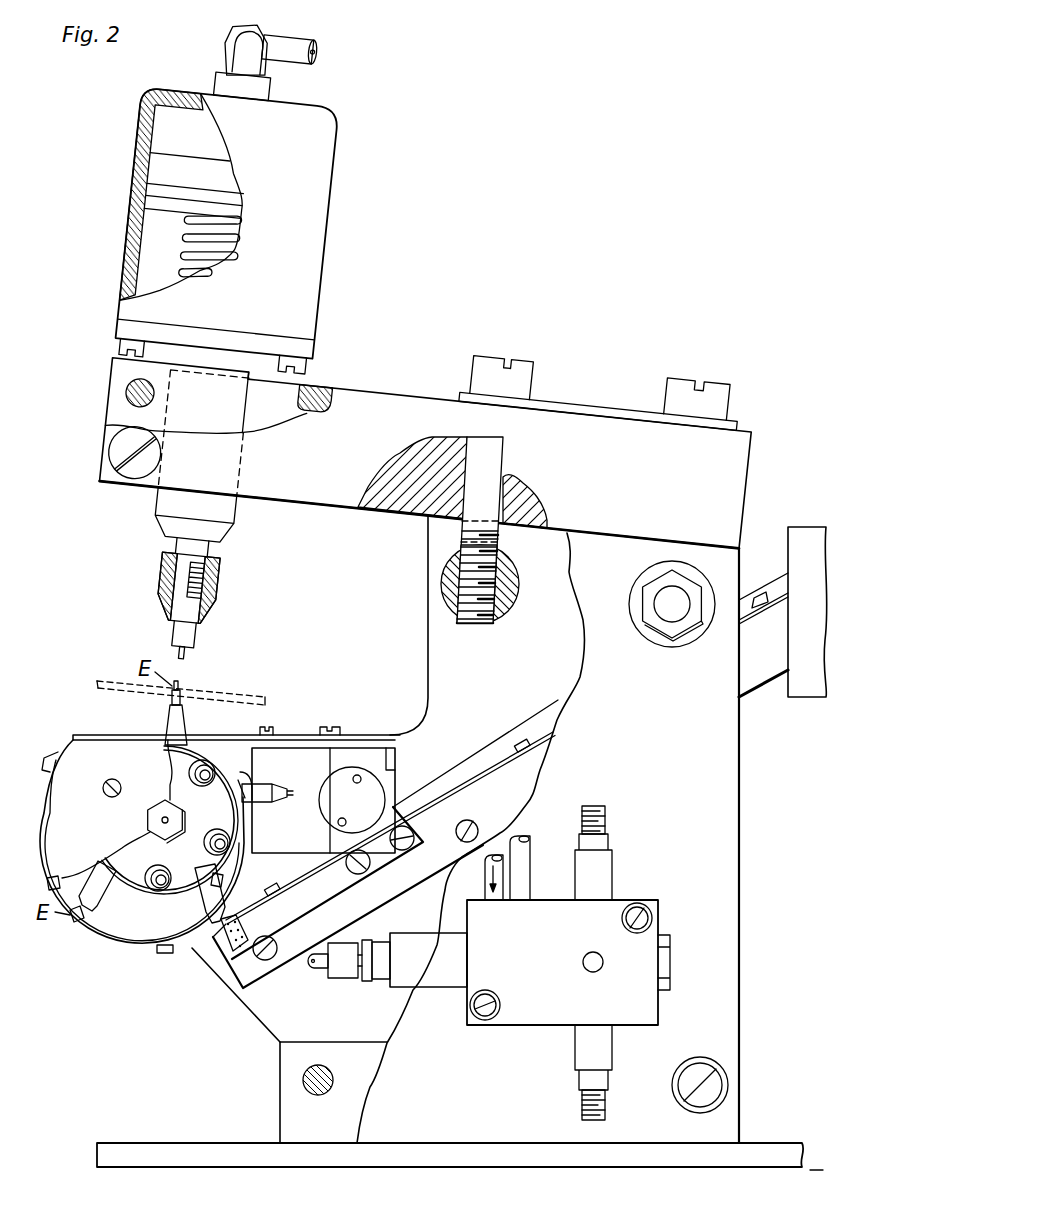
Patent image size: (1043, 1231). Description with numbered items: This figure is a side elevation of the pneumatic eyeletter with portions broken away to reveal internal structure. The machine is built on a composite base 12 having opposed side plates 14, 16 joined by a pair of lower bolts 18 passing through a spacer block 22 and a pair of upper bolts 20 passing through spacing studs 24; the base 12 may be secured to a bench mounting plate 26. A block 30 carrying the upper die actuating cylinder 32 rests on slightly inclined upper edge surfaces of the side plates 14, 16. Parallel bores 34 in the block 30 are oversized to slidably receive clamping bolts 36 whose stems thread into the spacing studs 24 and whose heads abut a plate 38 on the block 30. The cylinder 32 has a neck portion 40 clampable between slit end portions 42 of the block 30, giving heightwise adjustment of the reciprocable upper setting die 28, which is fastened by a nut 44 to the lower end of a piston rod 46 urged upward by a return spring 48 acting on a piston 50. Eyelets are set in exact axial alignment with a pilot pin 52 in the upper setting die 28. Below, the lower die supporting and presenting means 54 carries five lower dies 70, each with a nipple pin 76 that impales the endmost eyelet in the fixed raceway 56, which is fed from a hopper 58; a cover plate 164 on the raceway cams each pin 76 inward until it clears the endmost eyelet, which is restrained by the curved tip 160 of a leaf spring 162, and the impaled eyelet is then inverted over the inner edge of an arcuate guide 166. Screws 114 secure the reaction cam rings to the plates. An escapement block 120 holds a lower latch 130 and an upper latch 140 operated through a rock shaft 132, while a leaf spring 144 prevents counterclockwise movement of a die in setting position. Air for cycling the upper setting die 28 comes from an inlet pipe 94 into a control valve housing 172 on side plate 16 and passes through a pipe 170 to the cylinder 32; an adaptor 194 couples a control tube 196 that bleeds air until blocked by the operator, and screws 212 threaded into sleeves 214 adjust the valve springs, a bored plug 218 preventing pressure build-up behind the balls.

The composite base 12 is at (758, 842).
The side plate 14 is at (497, 676).
The side plate 16 is at (582, 620).
The lower bolts 18 is at (319, 1096).
The upper bolts 20 is at (676, 612).
The spacer block 22 is at (352, 1042).
The spacing studs 24 is at (508, 571).
The bench mounting plate 26 is at (150, 1143).
The upper setting die 28 is at (172, 632).
The block 30 is at (390, 396).
The upper die actuating cylinder 32 is at (321, 218).
The parallel bores 34 is at (505, 477).
The clamping bolts 36 is at (532, 368).
The plate 38 is at (610, 405).
The neck portion 40 is at (160, 505).
The slit end portions 42 is at (105, 424).
The nut 44 is at (160, 590).
The piston rod 46 is at (172, 556).
The return spring 48 is at (186, 224).
The piston 50 is at (189, 166).
The pilot pin 52 is at (186, 651).
The lower die supporting and presenting means 54 is at (88, 939).
The raceway 56 is at (500, 733).
The hopper 58 is at (807, 527).
The lower dies 70 is at (187, 716).
The nipple pin 76 is at (291, 789).
The inlet pipe 94 is at (486, 870).
The screws 114 is at (104, 790).
The block 120 is at (308, 842).
The lower latch 130 is at (258, 852).
The rock shaft 132 is at (374, 799).
The upper latch 140 is at (244, 778).
The leaf spring 144 is at (91, 735).
The curved tip 160 is at (231, 946).
The leaf spring 162 is at (343, 890).
The cover plate 164 is at (277, 895).
The arcuate guide 166 is at (139, 952).
The pipe 170 is at (531, 861).
The control valve housing 172 is at (515, 1028).
The adaptor 194 is at (405, 988).
The control tube 196 is at (318, 969).
The screws 212 is at (606, 818).
The sleeves 214 is at (612, 866).
The bored plug 218 is at (670, 962).